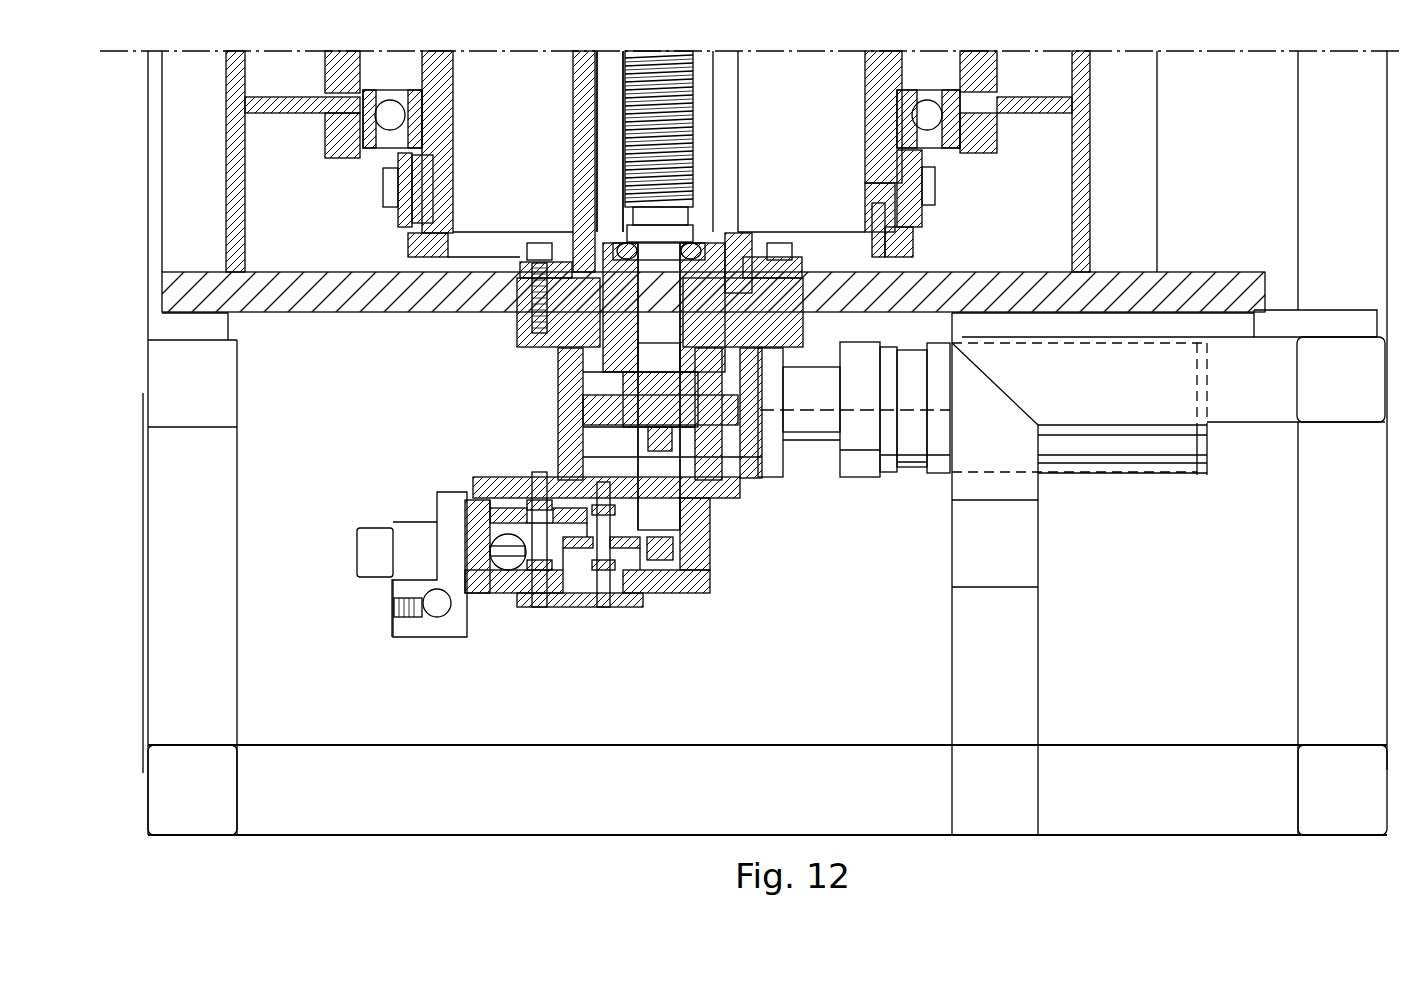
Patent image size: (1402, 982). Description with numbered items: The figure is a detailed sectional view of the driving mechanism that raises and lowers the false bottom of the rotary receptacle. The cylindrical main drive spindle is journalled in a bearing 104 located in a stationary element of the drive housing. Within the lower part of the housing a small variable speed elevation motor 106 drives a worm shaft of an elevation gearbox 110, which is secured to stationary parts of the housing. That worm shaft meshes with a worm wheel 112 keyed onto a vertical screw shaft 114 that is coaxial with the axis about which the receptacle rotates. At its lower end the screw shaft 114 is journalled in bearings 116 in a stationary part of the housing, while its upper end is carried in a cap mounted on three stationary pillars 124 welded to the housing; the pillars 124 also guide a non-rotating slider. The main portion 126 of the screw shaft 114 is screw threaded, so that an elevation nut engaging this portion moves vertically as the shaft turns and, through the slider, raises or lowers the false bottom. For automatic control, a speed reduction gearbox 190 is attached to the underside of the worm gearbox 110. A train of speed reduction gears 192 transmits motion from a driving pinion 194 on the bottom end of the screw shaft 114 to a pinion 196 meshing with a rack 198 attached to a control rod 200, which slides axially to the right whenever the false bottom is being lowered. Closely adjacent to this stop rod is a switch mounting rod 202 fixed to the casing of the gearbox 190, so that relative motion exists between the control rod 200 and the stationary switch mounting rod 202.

The bearing 104 is at (955, 88).
The elevation motor 106 is at (940, 477).
The elevation gearbox 110 is at (560, 445).
The worm wheel 112 is at (583, 400).
The screw shaft 114 is at (723, 272).
The bearings 116 is at (607, 278).
The stationary pillars 124 is at (573, 122).
The main portion of the screw shaft 126 is at (692, 115).
The speed reduction gearbox 190 is at (700, 570).
The train of speed reduction gears 192 is at (497, 480).
The driving pinion 194 is at (683, 540).
The pinion 196 is at (577, 610).
The rack 198 is at (530, 627).
The control rod 200 is at (500, 547).
The switch mounting rod 202 is at (440, 613).